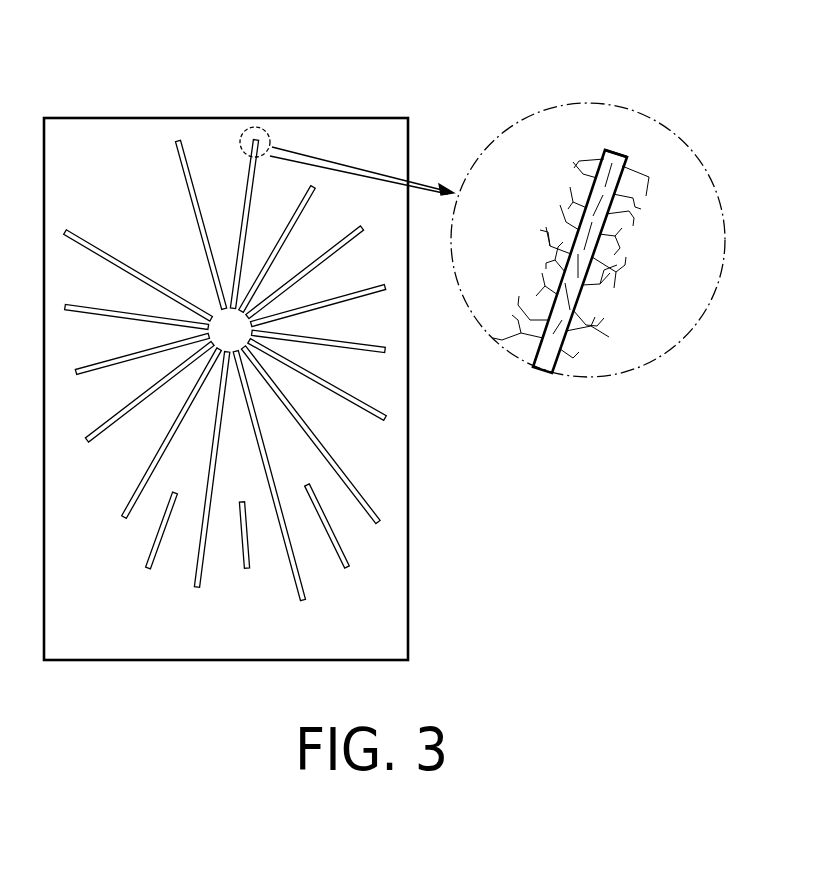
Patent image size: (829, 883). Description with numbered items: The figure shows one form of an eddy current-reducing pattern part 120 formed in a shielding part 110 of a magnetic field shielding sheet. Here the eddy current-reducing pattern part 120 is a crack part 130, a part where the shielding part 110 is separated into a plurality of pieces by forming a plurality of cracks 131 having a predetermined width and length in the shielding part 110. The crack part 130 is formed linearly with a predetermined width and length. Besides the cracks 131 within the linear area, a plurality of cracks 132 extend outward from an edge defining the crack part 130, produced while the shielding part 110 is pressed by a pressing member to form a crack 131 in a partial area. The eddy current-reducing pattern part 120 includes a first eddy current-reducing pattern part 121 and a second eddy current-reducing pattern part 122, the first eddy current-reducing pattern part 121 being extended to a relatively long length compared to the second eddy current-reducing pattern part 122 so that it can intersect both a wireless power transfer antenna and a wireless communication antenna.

The shielding part 110 is at (82, 142).
The eddy current-reducing pattern part 120 is at (278, 342).
The first eddy current-reducing pattern part 121 is at (303, 586).
The second eddy current-reducing pattern part 122 is at (341, 550).
The crack part 130 is at (580, 206).
The cracks 131 is at (578, 233).
The cracks 132 is at (594, 150).